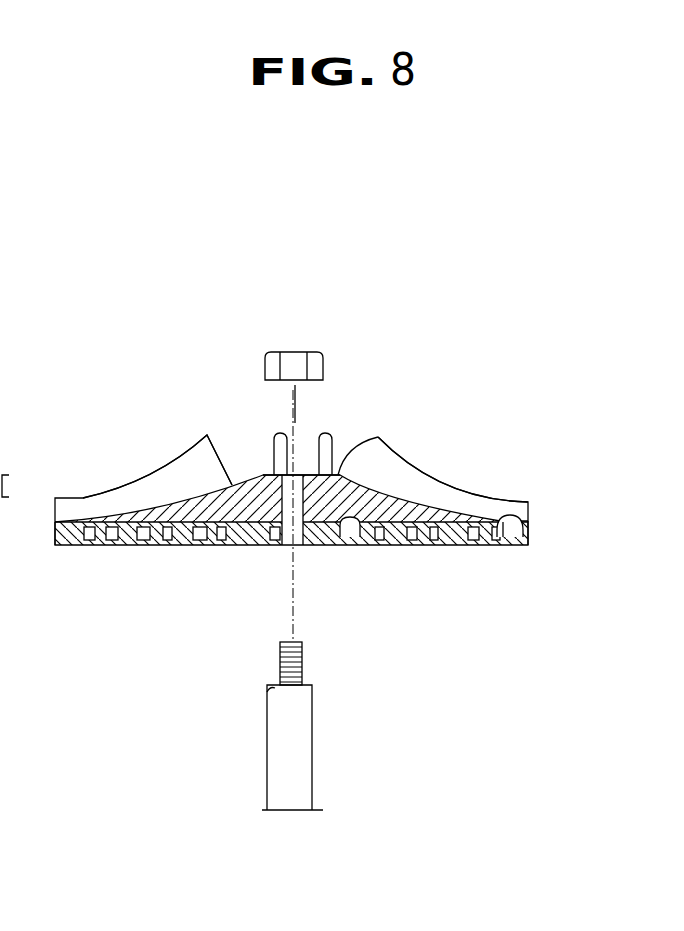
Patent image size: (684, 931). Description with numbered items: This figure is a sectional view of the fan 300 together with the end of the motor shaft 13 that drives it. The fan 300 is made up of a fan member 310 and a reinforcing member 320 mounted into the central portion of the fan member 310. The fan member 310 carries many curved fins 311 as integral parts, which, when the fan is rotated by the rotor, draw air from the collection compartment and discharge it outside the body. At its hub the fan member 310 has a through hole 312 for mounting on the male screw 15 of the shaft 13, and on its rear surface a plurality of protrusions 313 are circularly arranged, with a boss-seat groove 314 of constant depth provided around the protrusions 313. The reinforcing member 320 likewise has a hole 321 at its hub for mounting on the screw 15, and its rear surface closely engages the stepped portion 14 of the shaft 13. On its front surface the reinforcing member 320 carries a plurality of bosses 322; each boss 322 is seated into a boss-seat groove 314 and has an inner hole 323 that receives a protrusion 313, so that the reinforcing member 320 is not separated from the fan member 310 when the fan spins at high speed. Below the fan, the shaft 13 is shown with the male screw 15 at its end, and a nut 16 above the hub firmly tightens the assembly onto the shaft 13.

The fan 300 is at (550, 472).
The fan member 310 is at (465, 487).
The curved fins 311 is at (188, 460).
The through hole 312 is at (293, 488).
The protrusions 313 is at (98, 547).
The boss-seat groove 314 is at (338, 547).
The reinforcing member 320 is at (533, 533).
The hole 321 is at (287, 547).
The bosses 322 is at (530, 547).
The inner hole 323 is at (502, 547).
The shaft 13 is at (300, 760).
The stepped portion 14 is at (272, 688).
The male screw 15 is at (307, 660).
The nut 16 is at (293, 360).